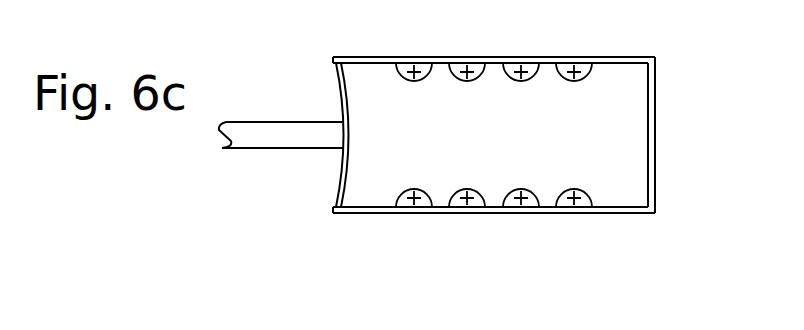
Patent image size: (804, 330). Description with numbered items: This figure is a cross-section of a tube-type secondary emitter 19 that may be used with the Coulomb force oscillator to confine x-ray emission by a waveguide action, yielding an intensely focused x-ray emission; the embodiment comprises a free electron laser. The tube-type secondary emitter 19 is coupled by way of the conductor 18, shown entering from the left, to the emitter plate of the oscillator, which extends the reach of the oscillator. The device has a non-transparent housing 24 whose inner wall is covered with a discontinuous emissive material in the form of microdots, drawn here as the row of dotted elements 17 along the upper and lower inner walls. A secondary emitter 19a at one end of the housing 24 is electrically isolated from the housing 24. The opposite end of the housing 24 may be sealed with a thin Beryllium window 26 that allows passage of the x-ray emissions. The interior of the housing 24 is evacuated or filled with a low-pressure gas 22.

The tube-type secondary emitter 19 is at (714, 70).
The secondary emitter 19a is at (340, 183).
The non-transparent housing 24 is at (372, 56).
The thin Beryllium window 26 is at (657, 118).
The contact terminals 17 is at (578, 83).
The low-pressure gas 22 is at (507, 152).
The conductor 18 is at (265, 121).